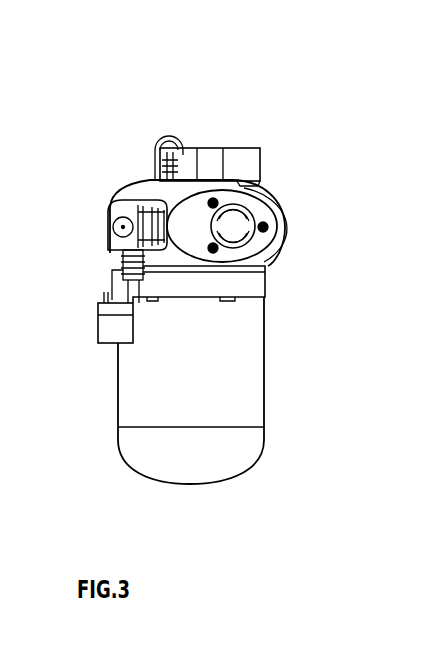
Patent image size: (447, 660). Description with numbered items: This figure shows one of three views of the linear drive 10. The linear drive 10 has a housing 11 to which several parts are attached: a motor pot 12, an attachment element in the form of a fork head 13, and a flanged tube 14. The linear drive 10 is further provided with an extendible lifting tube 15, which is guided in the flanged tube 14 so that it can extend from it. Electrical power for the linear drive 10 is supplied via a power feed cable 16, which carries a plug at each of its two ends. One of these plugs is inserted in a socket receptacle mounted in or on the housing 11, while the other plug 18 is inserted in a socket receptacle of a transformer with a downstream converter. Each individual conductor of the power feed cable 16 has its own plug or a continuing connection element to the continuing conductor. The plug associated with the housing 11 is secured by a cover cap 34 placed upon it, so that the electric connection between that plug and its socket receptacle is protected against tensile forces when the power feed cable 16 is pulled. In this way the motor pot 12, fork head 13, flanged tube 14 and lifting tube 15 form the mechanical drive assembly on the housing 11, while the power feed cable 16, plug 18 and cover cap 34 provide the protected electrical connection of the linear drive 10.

The linear drive 10 is at (266, 331).
The housing 11 is at (158, 195).
The motor pot 12 is at (215, 393).
The fork head 13 is at (168, 137).
The flanged tube 14 is at (255, 205).
The lifting tube 15 is at (238, 227).
The power feed cable 16 is at (112, 254).
The plug 18 is at (105, 347).
The cover cap 34 is at (112, 210).